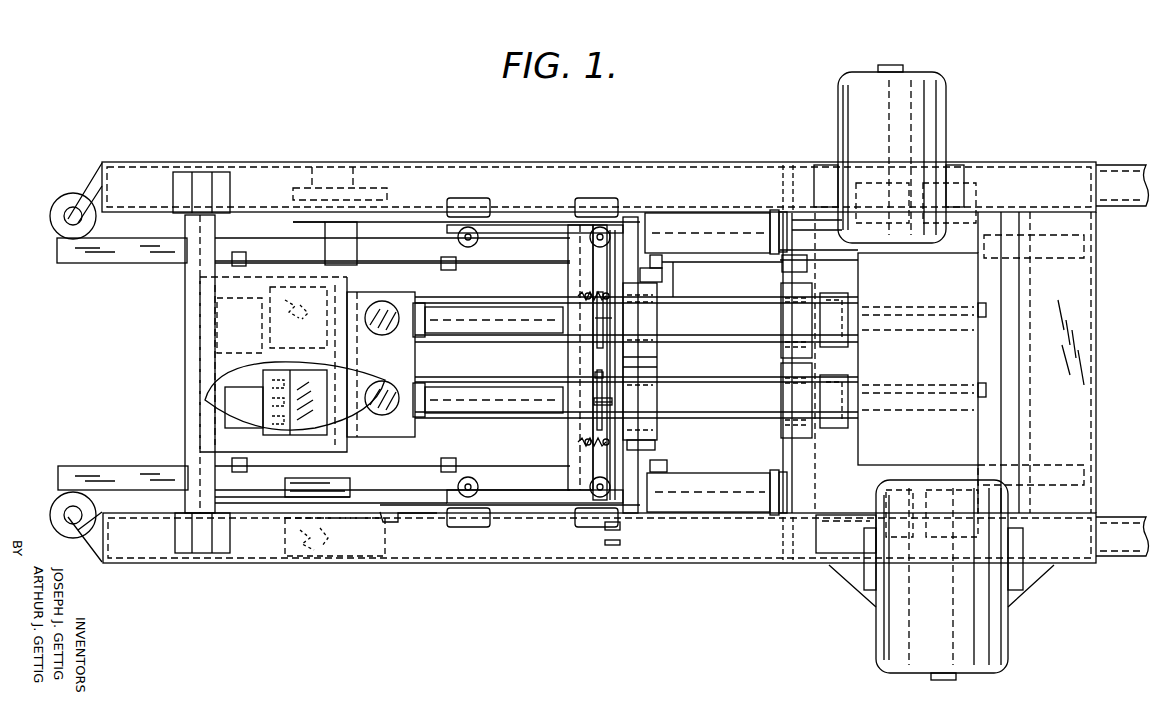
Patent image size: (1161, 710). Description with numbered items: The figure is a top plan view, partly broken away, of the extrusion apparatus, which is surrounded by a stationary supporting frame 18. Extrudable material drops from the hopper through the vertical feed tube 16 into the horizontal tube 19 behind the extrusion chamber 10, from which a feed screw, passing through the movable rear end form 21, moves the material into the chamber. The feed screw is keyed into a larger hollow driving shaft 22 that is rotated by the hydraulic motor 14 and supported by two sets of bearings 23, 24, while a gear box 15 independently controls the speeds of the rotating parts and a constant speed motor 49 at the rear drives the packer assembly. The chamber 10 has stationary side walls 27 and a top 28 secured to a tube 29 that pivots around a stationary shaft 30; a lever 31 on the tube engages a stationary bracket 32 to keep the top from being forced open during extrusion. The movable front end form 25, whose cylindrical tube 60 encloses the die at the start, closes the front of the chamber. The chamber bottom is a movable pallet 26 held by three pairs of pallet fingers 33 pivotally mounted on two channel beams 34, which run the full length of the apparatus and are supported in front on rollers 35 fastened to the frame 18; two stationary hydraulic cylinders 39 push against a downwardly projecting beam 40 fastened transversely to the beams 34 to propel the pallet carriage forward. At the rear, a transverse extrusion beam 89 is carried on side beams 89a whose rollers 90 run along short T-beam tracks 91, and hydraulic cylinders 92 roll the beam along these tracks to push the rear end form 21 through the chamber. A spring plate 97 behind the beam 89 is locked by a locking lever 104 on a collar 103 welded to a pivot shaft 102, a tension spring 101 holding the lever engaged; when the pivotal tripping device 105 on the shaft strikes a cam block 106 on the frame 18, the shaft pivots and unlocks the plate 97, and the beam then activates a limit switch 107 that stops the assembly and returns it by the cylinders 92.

The extrusion chamber 10 is at (190, 375).
The motor 14 is at (934, 103).
The gear box 15 is at (958, 283).
The vertical feed tube 16 is at (387, 312).
The stationary supporting frame 18 is at (359, 162).
The horizontal tube 19 is at (386, 436).
The rear end form 21 is at (370, 380).
The hollow driving shaft 22 is at (508, 307).
The bearings 23 is at (657, 328).
The bearings 24 is at (810, 298).
The front end form 25 is at (262, 401).
The pallet 26 is at (674, 282).
The side walls 27 is at (345, 363).
The top 28 is at (327, 290).
The tube 29 is at (186, 500).
The stationary shaft 30 is at (203, 554).
The lever 31 is at (268, 498).
The stationary bracket 32 is at (288, 498).
The pallet fingers 33 is at (246, 257).
The channel beams 34 is at (293, 220).
The rollers 35 is at (58, 208).
The hydraulic cylinders 39 is at (1122, 169).
The downwardly projecting beam 40 is at (783, 165).
The constant speed motor 49 is at (996, 634).
The cylindrical tube 60 is at (245, 378).
The rear end extrusion beam 89 is at (568, 361).
The side beams 89a is at (515, 225).
The rollers 90 is at (595, 198).
The tracks 91 is at (395, 222).
The hydraulic cylinders 92 is at (713, 213).
The spring plate 97 is at (597, 335).
The tension spring 101 is at (580, 290).
The pivot shaft 102 is at (605, 392).
The cylindrical collars 103 is at (655, 438).
The locking lever 104 is at (594, 401).
The pivotal tripping device 105 is at (615, 530).
The cam block 106 is at (430, 522).
The limit switch 107 is at (340, 556).